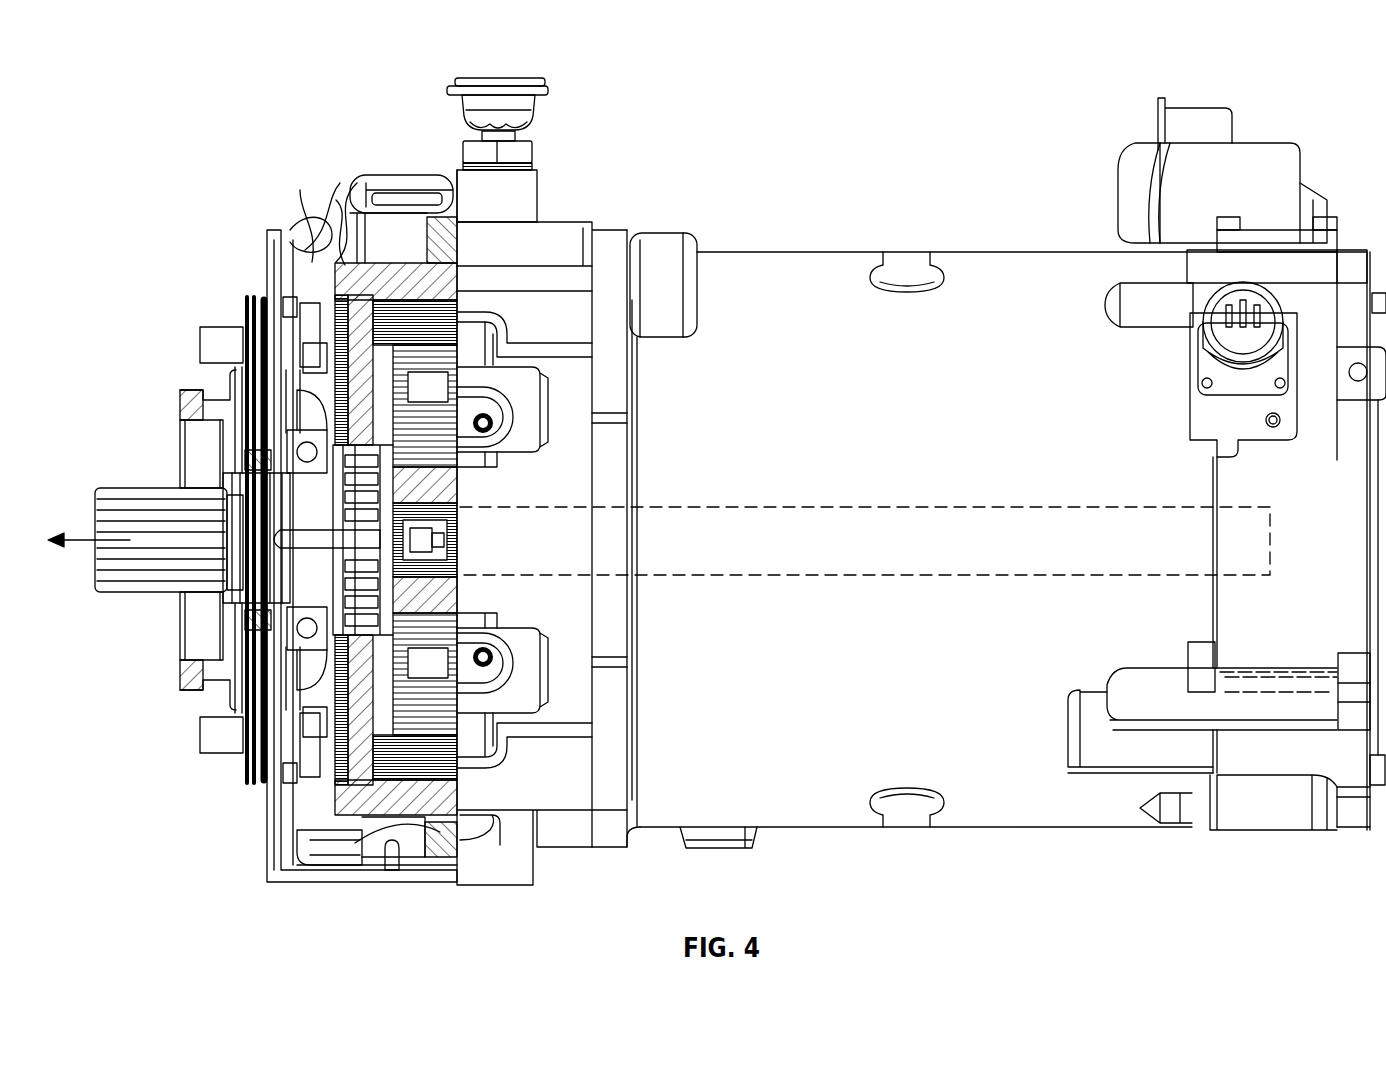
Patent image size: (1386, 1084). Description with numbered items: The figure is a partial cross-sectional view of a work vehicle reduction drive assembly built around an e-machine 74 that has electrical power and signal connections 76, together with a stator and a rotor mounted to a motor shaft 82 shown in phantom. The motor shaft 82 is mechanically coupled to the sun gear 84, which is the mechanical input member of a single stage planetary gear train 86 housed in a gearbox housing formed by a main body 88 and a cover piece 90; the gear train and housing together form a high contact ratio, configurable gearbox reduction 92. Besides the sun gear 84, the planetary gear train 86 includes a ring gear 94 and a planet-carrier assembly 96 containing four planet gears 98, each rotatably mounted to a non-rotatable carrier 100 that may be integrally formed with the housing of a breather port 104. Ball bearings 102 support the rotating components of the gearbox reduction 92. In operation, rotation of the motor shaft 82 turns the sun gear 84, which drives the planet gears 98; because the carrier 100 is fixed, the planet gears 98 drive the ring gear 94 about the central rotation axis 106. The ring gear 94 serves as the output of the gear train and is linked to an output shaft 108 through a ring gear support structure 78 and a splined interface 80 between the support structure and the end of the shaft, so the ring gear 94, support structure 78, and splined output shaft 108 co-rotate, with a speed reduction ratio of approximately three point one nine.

The e-machine 74 is at (971, 253).
The electrical connections 76 is at (1130, 168).
The ring gear support structure 78 is at (357, 745).
The splined interface 80 is at (367, 600).
The motor shaft 82 is at (805, 545).
The sun gear 84 is at (420, 597).
The planetary gear train 86 is at (355, 268).
The main body 88 is at (327, 872).
The cover piece 90 is at (246, 299).
The gearbox reduction 92 is at (408, 880).
The ring gear 94 is at (405, 272).
The planet-carrier assembly 96 is at (370, 375).
The planet gears 98 is at (442, 400).
The carrier 100 is at (468, 352).
The ball bearings 102 is at (306, 452).
The breather port 104 is at (494, 80).
The central rotation axis 106 is at (80, 540).
The output shaft 108 is at (130, 488).